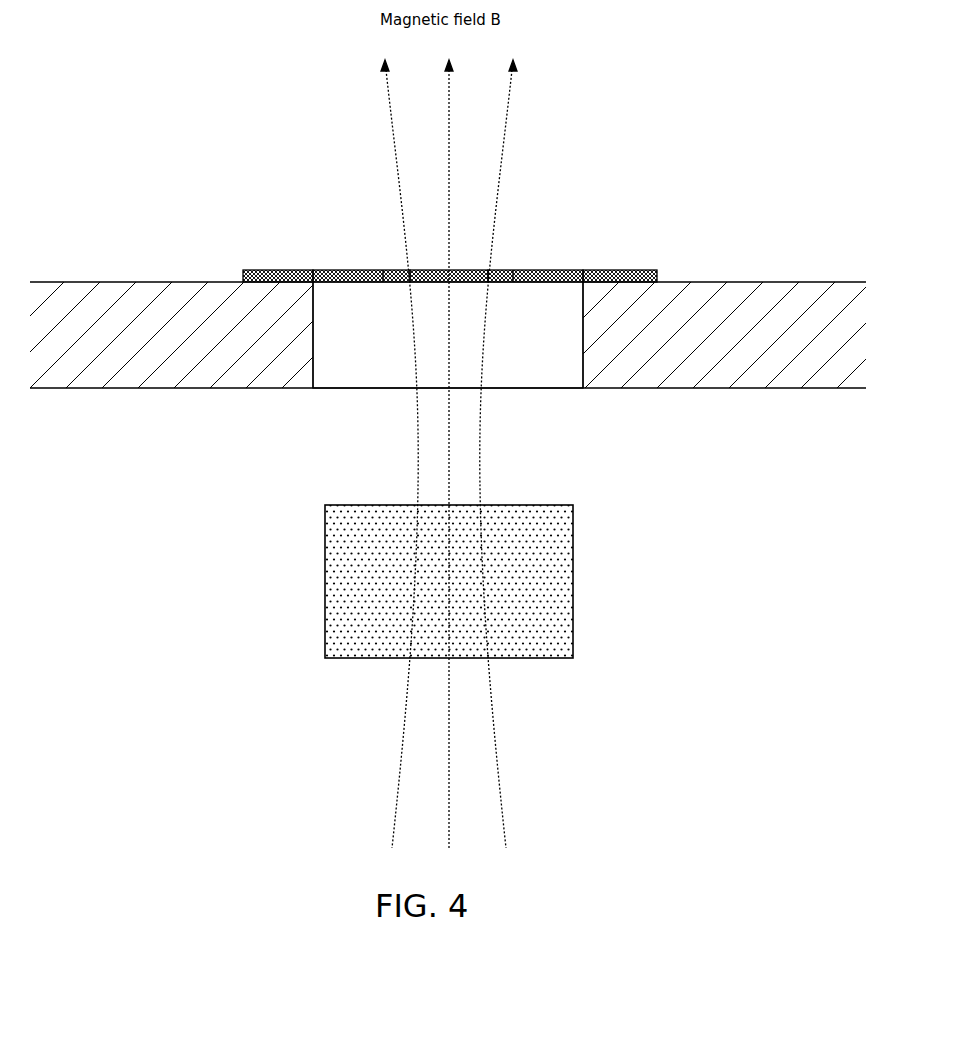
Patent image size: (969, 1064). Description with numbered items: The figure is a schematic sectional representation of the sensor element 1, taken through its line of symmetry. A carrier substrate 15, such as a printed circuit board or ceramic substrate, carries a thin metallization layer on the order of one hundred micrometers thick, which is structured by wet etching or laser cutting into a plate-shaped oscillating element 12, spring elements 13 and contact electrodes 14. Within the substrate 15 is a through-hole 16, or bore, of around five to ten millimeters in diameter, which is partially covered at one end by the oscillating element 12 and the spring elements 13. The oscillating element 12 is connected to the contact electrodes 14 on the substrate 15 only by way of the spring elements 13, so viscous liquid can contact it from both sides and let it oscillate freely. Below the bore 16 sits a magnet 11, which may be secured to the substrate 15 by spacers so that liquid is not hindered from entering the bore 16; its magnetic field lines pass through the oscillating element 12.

The sensor element 1 is at (192, 103).
The magnet 11 is at (325, 588).
The oscillating element 12 is at (455, 268).
The spring elements 13 is at (407, 254).
The contact electrodes 14 is at (277, 268).
The carrier substrate 15 is at (145, 281).
The through-hole 16 is at (525, 375).